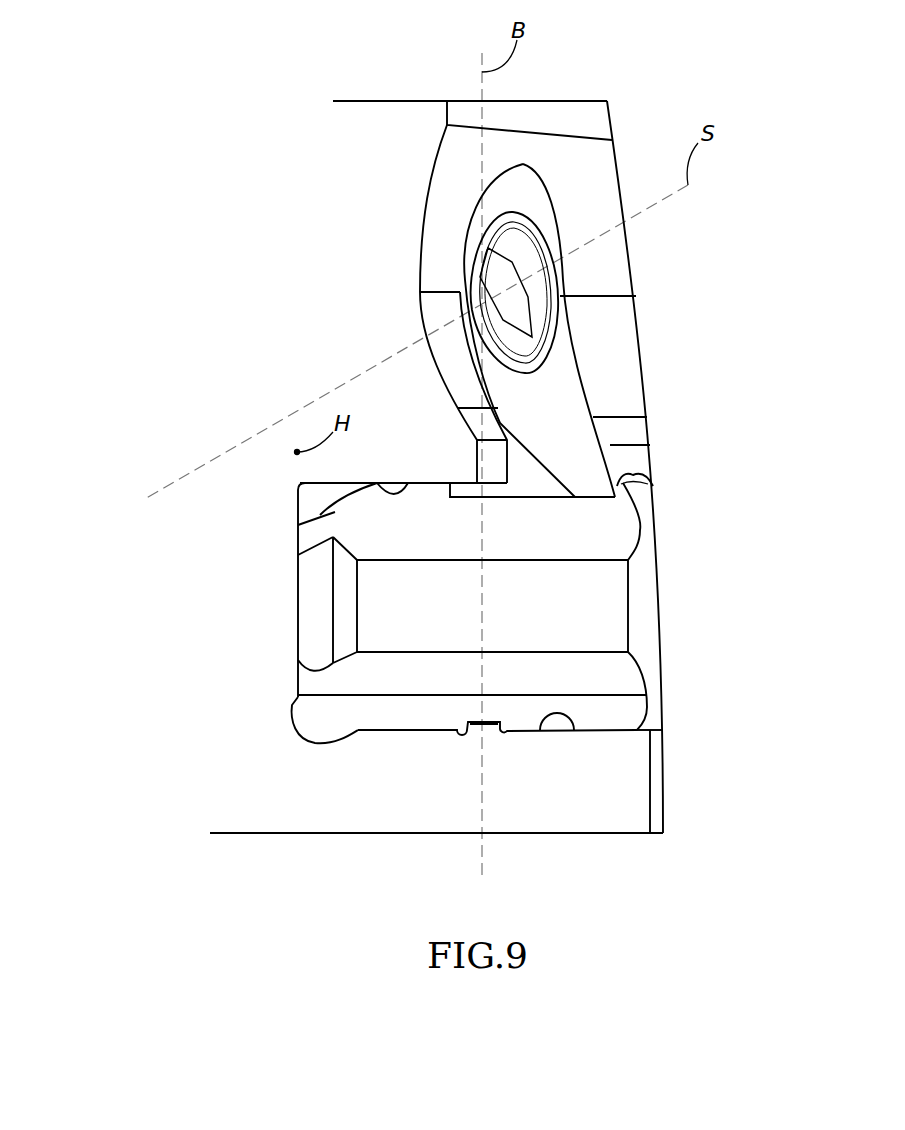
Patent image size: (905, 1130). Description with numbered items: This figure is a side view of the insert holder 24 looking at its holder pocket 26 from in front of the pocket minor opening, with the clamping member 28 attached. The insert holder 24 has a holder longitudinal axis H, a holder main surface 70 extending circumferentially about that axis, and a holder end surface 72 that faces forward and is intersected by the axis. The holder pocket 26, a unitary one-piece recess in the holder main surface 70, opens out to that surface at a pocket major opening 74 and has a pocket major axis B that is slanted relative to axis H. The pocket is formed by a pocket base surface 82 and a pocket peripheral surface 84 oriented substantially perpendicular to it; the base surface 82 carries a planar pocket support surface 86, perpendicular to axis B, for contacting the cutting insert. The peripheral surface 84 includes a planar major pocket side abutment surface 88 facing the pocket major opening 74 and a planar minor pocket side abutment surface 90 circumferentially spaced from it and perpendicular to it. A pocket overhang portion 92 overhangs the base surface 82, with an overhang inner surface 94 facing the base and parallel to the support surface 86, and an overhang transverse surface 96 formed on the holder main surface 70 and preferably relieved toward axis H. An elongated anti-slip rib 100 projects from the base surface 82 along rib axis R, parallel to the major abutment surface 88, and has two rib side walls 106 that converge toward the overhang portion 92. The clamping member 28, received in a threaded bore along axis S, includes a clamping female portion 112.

The insert holder 24 is at (278, 192).
The holder pocket 26 is at (613, 531).
The clamping member 28 is at (571, 390).
The holder main surface 70 is at (663, 783).
The holder end surface 72 is at (403, 797).
The pocket major opening 74 is at (569, 686).
The pocket base surface 82 is at (397, 714).
The pocket peripheral surface 84 is at (600, 609).
The pocket support surface 86 is at (572, 732).
The major pocket side abutment surface 88 is at (358, 614).
The minor pocket side abutment surface 90 is at (538, 619).
The pocket overhang portion 92 is at (612, 342).
The overhang inner surface 94 is at (450, 498).
The overhang transverse surface 96 is at (600, 273).
The anti-slip rib 100 is at (466, 713).
The rib side walls 106 is at (462, 729).
The clamping female portion 112 is at (565, 445).